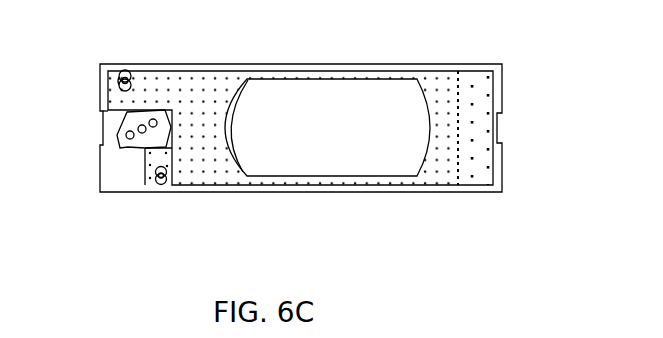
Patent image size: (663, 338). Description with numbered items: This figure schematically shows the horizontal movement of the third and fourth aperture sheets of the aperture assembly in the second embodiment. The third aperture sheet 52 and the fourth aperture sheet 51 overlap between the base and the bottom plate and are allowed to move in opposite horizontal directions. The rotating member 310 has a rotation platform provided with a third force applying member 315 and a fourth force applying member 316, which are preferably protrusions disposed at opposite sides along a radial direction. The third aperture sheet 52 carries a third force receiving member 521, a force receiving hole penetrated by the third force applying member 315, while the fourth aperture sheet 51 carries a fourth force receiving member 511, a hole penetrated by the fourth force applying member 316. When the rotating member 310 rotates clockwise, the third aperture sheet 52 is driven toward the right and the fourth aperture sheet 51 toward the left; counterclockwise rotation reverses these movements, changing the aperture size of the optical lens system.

The fourth aperture sheet 51 is at (471, 80).
The third aperture sheet 52 is at (188, 82).
The third force receiving member 521 is at (128, 70).
The third force applying member 315 is at (118, 80).
The rotating member 310 is at (115, 135).
The fourth force applying member 316 is at (157, 185).
The fourth force receiving member 511 is at (168, 186).